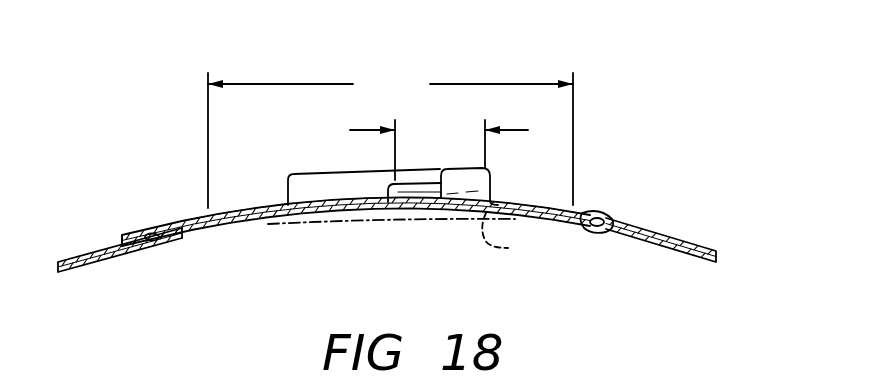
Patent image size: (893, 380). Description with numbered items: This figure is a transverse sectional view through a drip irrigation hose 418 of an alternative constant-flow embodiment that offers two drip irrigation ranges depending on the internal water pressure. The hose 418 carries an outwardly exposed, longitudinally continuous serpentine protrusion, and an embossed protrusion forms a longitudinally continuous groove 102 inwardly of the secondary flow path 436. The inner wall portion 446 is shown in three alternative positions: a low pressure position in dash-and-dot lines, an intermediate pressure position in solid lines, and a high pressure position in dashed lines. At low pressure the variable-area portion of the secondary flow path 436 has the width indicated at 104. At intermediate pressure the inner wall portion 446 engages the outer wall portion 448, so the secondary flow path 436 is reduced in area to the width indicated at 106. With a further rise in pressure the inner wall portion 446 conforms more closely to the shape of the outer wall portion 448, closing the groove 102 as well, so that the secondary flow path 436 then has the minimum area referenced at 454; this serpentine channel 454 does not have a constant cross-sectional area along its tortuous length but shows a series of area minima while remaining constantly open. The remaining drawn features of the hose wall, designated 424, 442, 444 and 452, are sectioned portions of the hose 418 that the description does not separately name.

The low-pressure secondary flow path width 104 is at (390, 138).
The intermediate-pressure secondary flow path width 106 is at (439, 148).
The longitudinally continuous groove 102 is at (424, 202).
The drip irrigation hose 418 is at (658, 210).
The outer panel portion 424 is at (700, 248).
The secondary flow path 436 is at (323, 223).
The right joint 442 is at (593, 215).
The left joint 444 is at (173, 247).
The inner wall portion 446 is at (507, 222).
The outer wall portion 448 is at (251, 209).
The housing 452 is at (312, 175).
The serpentine channel 454 is at (478, 187).